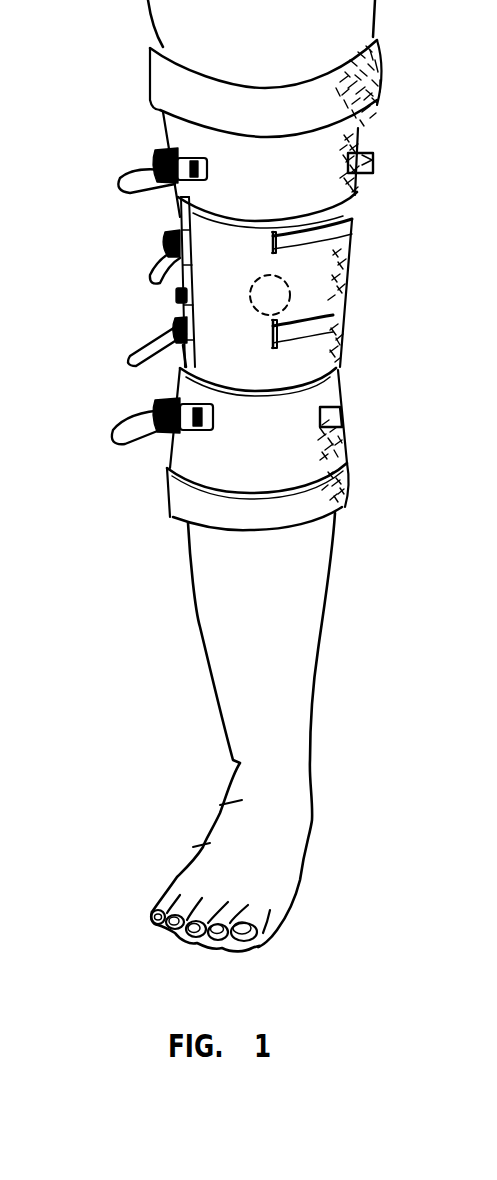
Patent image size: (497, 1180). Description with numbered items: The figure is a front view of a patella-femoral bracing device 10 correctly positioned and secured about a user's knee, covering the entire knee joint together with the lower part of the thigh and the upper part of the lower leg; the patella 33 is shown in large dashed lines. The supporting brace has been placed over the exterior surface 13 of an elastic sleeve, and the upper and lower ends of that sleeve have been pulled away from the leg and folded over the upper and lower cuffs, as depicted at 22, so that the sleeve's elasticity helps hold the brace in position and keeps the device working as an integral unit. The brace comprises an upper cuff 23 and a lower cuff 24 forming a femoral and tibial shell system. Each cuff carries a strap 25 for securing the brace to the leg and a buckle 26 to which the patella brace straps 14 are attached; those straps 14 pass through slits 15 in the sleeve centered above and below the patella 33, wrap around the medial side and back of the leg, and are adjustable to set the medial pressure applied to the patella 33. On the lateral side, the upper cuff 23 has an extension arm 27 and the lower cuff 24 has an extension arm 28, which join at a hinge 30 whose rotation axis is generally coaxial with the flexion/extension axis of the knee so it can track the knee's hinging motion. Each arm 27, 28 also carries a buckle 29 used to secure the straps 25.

The patella-femoral bracing device 10 is at (405, 192).
The exterior surface 13 is at (233, 307).
The straps 14 is at (120, 188).
The slits 15 is at (277, 252).
The folded-over ends of elastic sleeve 22 is at (286, 121).
The upper cuff 23 is at (283, 185).
The lower cuff 24 is at (274, 457).
The strap 25 is at (150, 273).
The buckle 26 is at (157, 150).
The extension arm 27 is at (173, 215).
The extension arm 28 is at (183, 355).
The buckle 29 is at (163, 237).
The hinge 30 is at (177, 295).
The patella 33 is at (292, 282).